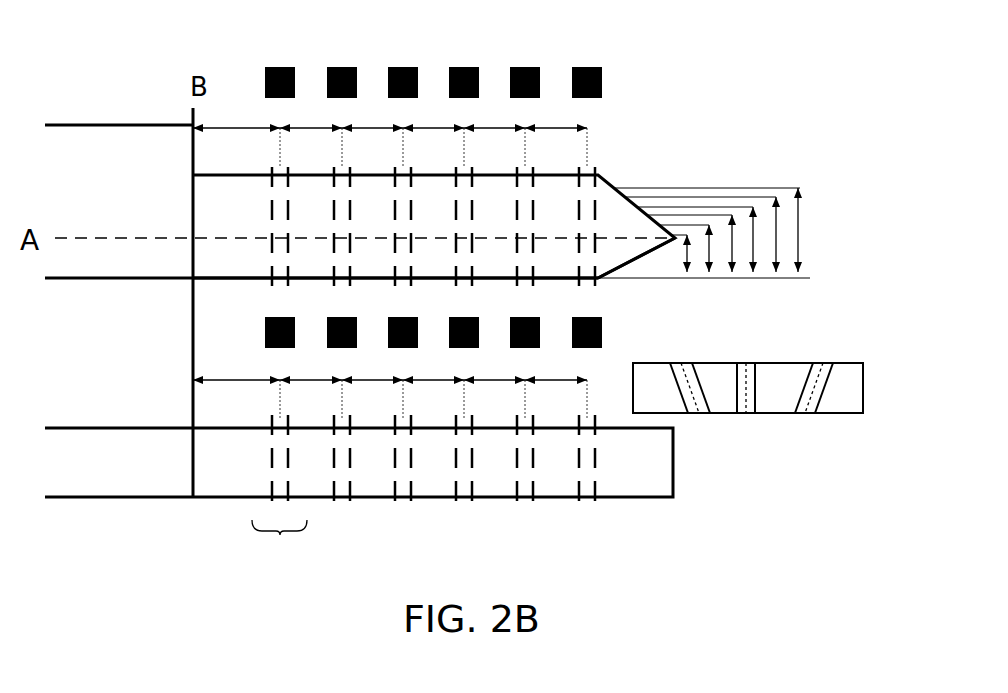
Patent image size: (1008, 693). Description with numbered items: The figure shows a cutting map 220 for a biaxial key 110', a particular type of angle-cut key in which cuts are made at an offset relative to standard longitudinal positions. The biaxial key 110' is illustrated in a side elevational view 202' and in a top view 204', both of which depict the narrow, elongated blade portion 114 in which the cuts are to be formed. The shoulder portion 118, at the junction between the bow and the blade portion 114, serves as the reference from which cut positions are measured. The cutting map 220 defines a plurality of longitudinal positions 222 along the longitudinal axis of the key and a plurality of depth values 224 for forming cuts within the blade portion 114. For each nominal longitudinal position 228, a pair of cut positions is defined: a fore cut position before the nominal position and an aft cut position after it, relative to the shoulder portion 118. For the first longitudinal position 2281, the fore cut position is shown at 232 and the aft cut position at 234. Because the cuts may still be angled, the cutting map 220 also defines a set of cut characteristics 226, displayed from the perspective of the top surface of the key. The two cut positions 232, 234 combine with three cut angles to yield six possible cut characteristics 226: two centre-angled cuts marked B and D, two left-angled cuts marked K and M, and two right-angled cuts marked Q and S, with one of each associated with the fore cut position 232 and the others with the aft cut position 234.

The biaxial key 110' is at (99, 251).
The blade portion 114 is at (238, 267).
The shoulder portion 118 is at (228, 99).
The side elevational view 202' is at (360, 220).
The top view 204' is at (359, 462).
The cutting map 220 is at (745, 57).
The longitudinal positions 222 is at (630, 67).
The depth values 224 is at (825, 170).
The cut characteristics 226 is at (797, 336).
The longitudinal position 228 is at (614, 289).
The first longitudinal position 2281 is at (281, 553).
The fore cut position 232 is at (266, 476).
The aft cut position 234 is at (297, 476).